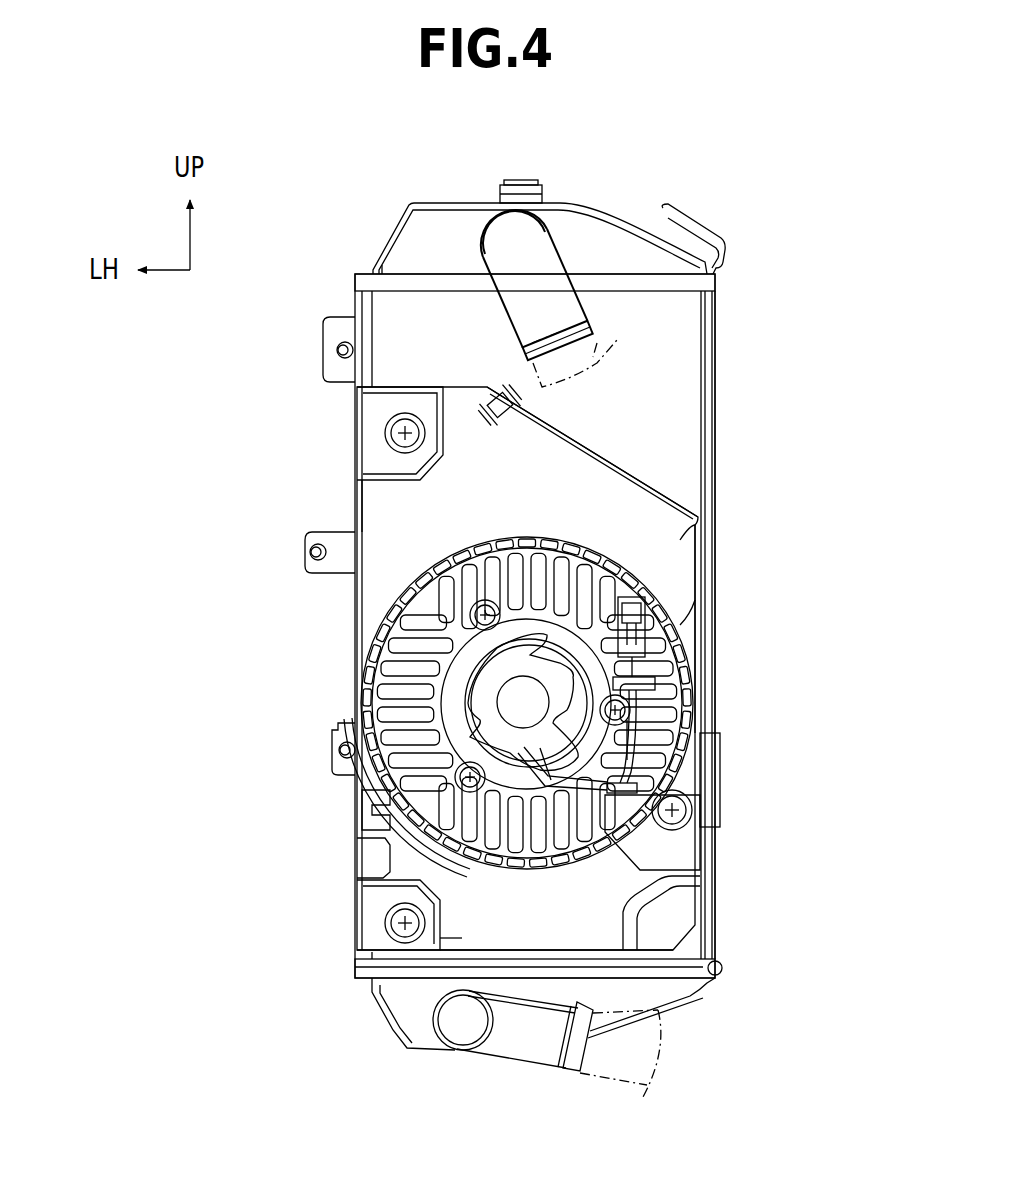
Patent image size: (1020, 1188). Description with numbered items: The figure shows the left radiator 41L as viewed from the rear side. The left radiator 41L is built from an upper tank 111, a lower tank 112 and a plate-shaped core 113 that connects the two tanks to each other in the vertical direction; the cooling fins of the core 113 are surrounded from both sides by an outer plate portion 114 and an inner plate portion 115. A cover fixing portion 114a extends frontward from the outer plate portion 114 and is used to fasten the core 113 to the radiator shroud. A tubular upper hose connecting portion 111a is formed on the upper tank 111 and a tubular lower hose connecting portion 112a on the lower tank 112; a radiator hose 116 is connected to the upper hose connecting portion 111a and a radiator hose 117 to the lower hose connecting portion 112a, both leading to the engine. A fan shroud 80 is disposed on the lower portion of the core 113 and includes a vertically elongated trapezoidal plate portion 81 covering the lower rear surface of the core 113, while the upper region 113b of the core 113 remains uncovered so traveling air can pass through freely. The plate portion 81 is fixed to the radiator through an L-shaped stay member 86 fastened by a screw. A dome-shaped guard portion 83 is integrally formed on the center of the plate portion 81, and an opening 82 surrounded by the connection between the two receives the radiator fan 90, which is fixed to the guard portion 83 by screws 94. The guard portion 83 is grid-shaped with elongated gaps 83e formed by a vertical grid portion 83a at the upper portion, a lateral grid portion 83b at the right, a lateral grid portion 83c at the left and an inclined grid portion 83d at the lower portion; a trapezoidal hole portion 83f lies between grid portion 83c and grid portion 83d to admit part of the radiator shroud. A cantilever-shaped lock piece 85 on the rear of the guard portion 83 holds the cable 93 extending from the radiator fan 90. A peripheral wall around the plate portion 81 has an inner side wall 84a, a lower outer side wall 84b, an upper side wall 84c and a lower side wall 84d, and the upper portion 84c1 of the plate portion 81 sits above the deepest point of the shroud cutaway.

The left radiator 41L is at (305, 342).
The fan shroud 80 is at (350, 475).
The plate portion 81 is at (355, 505).
The opening 82 is at (368, 708).
The guard portion 83 is at (716, 795).
The grid portion 83a is at (541, 535).
The grid portion 83b is at (702, 656).
The grid portion 83c is at (372, 605).
The grid portion 83d is at (512, 875).
The gaps 83e is at (605, 568).
The hole portion 83f is at (370, 772).
The inner side wall 84a is at (700, 585).
The outer side wall 84b is at (368, 815).
The upper side wall 84c is at (585, 440).
The upper portion 84c1 is at (497, 400).
The lower side wall 84d is at (470, 1052).
The lock piece 85 is at (700, 690).
The stay member 86 is at (388, 925).
The radiator fan 90 is at (685, 640).
The cable 93 is at (705, 742).
The screws 94 is at (478, 600).
The upper tank 111 is at (408, 246).
The upper hose connecting portion 111a is at (517, 277).
The lower tank 112 is at (410, 1010).
The lower hose connecting portion 112a is at (525, 1045).
The core 113 is at (410, 320).
The region 113b is at (690, 360).
The outer plate portion 114 is at (345, 368).
The cover fixing portion 114a is at (340, 745).
The inner plate portion 115 is at (716, 480).
The radiator hose 116 is at (617, 340).
The radiator hose 117 is at (603, 1063).